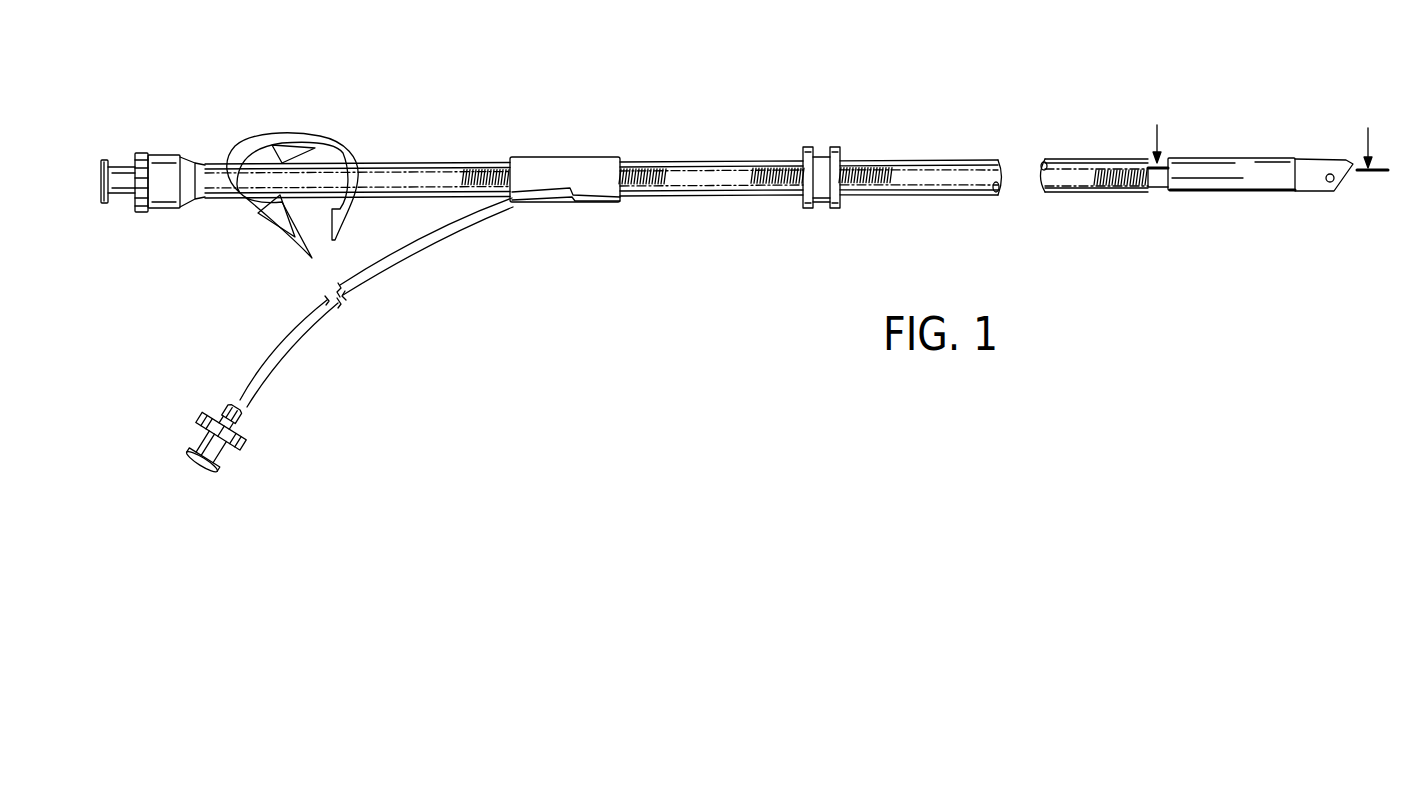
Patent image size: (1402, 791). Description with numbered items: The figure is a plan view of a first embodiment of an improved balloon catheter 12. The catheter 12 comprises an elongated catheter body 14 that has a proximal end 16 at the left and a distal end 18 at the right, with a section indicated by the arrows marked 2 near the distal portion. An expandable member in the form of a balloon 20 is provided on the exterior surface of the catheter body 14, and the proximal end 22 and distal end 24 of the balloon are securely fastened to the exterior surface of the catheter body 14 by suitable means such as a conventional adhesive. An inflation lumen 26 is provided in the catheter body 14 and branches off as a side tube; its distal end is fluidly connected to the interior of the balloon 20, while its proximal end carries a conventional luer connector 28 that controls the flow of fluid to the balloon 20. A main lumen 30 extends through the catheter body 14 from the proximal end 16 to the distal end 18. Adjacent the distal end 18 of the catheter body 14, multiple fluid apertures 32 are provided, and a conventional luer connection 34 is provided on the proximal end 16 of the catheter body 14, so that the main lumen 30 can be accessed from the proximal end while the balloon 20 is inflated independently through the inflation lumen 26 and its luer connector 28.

The section line 2- 2 is at (1261, 142).
The catheter 12 is at (723, 137).
The catheter body 14 is at (653, 163).
The proximal end 16 is at (218, 162).
The distal end 18 is at (1330, 195).
The balloon 20 is at (1240, 158).
The proximal end of the balloon 22 is at (1180, 157).
The distal end of the balloon 24 is at (1286, 195).
The inflation lumen 26 is at (431, 241).
The luer connector 28 is at (192, 432).
The main lumen 30 is at (1065, 183).
The fluid apertures 32 is at (1336, 181).
The luer connection 34 is at (138, 155).